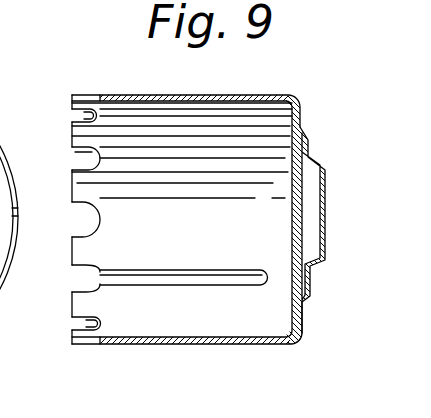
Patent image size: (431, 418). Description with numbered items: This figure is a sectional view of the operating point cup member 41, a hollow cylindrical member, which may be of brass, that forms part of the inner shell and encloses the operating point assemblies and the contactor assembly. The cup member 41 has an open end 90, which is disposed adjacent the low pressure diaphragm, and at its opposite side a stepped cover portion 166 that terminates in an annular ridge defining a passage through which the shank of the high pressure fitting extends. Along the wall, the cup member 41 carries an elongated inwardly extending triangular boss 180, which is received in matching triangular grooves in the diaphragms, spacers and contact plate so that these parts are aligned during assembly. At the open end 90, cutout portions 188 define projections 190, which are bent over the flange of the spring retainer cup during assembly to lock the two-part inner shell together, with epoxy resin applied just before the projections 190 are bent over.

The operating point cup member 41 is at (188, 347).
The stepped cover portion 166 is at (303, 109).
The cutout portions 188 is at (72, 150).
The projections 190 is at (72, 248).
The triangular boss 180 is at (190, 275).
The open end 90 is at (63, 328).